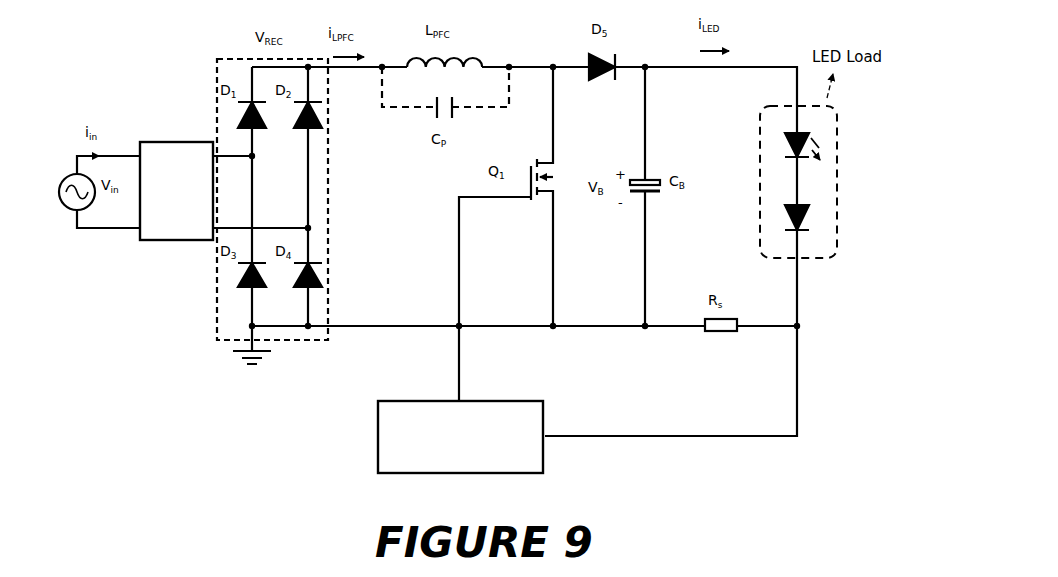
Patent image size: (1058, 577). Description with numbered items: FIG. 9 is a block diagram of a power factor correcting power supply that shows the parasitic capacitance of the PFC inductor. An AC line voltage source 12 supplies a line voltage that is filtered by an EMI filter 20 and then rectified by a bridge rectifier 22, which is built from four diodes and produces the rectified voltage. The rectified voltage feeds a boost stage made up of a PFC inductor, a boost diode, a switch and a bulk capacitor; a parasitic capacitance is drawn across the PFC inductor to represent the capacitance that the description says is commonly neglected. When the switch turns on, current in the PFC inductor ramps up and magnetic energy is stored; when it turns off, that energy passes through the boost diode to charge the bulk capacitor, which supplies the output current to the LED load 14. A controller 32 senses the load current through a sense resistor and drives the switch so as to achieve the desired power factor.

The AC input voltage source 12 is at (66, 178).
The LED load 14 is at (837, 183).
The EMI filter 20 is at (176, 191).
The bridge rectifier 22 is at (225, 58).
The controller 32 is at (460, 437).